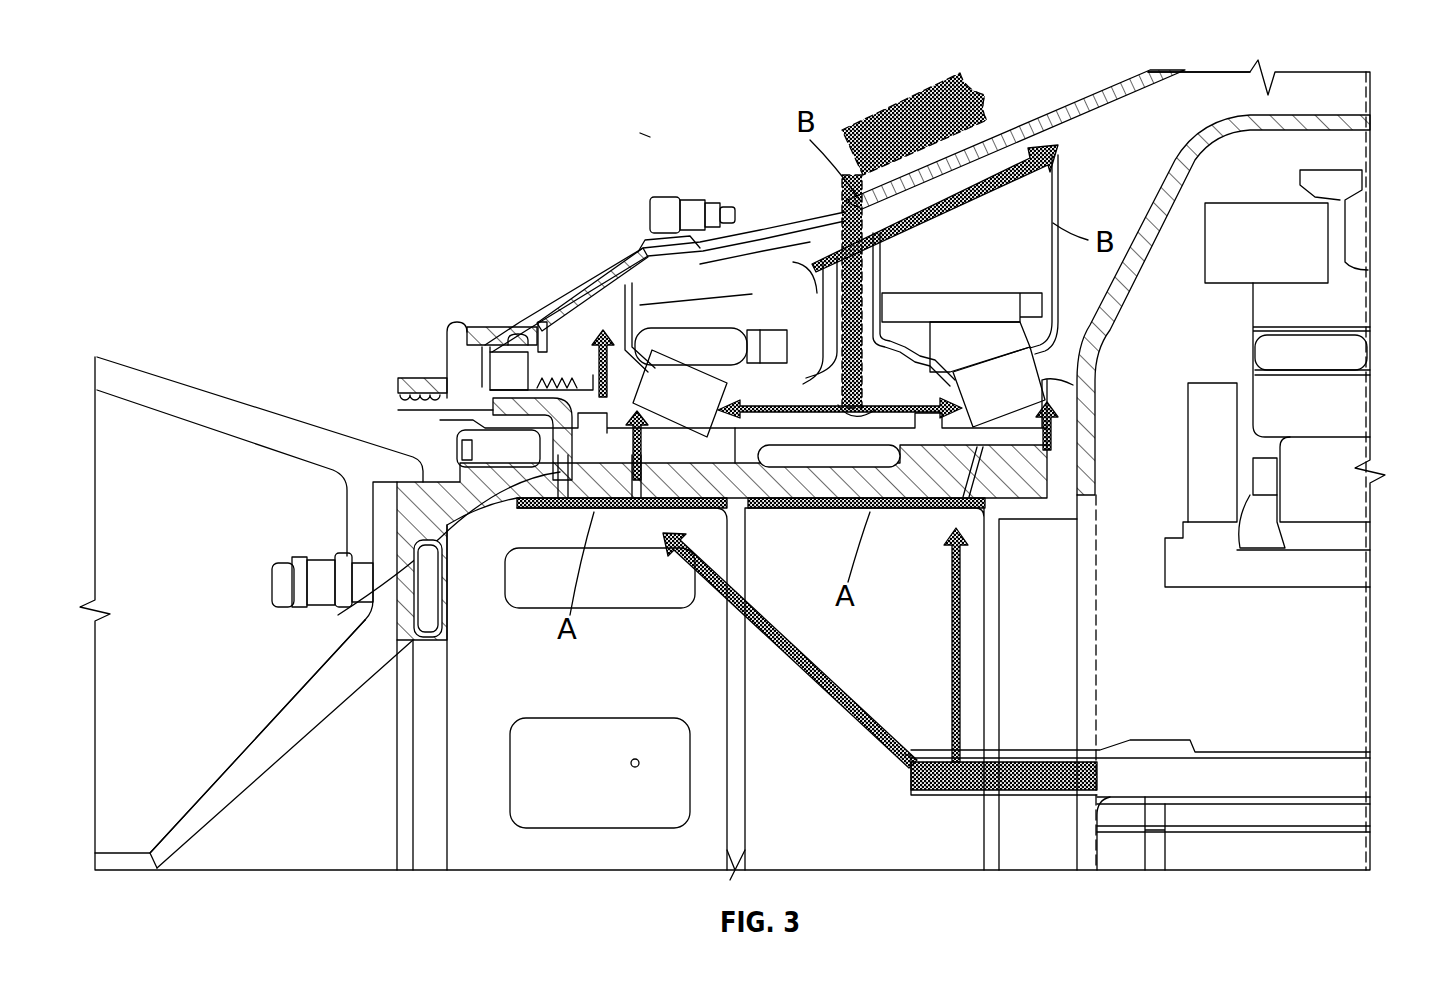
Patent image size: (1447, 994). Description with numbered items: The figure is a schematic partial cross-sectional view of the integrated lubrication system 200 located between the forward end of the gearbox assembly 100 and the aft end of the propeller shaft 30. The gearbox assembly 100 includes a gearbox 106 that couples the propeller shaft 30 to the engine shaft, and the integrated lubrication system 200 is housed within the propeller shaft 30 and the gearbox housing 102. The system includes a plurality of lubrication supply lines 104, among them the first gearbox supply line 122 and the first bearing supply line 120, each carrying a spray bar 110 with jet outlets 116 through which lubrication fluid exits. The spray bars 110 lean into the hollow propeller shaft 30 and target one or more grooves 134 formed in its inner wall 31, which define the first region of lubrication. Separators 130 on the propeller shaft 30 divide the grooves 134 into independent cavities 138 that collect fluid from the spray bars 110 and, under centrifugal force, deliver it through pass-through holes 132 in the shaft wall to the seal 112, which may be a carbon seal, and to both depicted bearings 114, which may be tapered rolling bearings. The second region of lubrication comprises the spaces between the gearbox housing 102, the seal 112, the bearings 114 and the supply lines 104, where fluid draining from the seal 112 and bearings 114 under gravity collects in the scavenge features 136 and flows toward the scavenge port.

The propeller shaft 30 is at (167, 398).
The inner wall 31 is at (338, 615).
The gearbox assembly 100 is at (1190, 46).
The gearbox housing 102 is at (1073, 117).
The lubrication supply lines 104 is at (842, 132).
The gearbox 106 is at (1362, 150).
The spray bar 110 is at (847, 210).
The seal 112 is at (490, 393).
The bearings 114 is at (637, 280).
The jet outlets 116 is at (785, 358).
The first bearing supply line 120 is at (905, 85).
The first gearbox supply line 122 is at (1350, 800).
The separators 130 is at (754, 519).
The pass-through holes 132 is at (370, 607).
The grooves 134 is at (494, 511).
The scavenge features 136 is at (880, 315).
The cavities 138 is at (530, 478).
The integrated lubrication system 200 is at (672, 136).